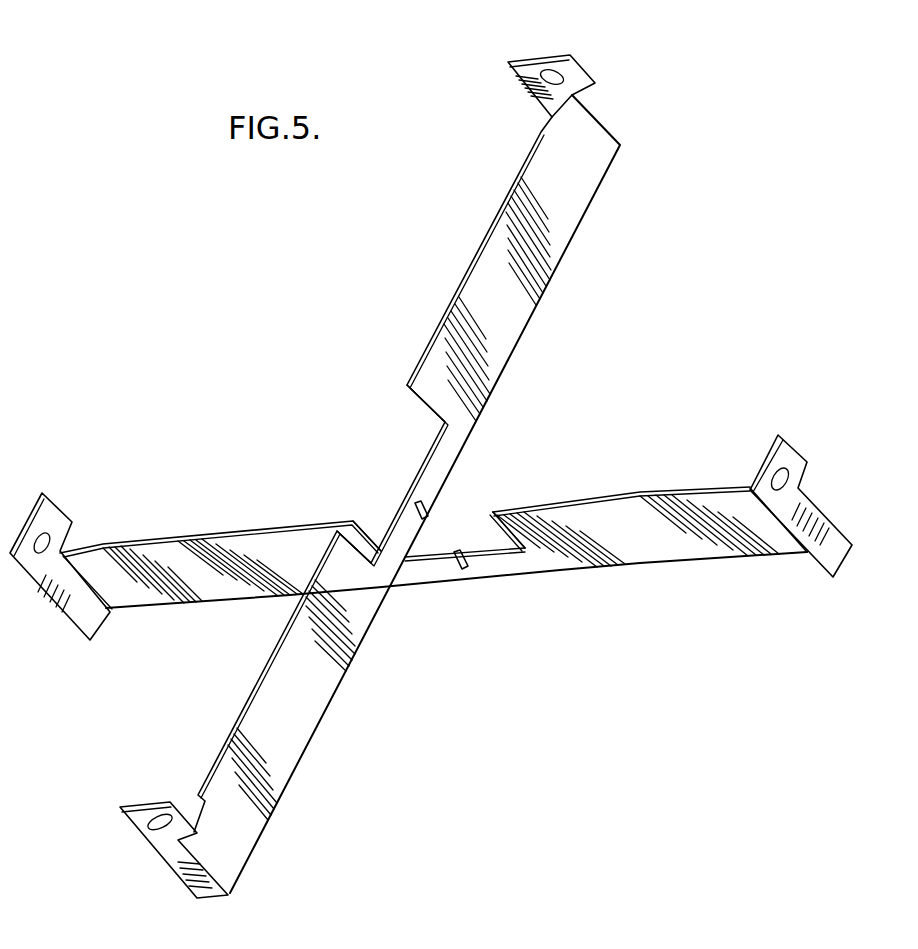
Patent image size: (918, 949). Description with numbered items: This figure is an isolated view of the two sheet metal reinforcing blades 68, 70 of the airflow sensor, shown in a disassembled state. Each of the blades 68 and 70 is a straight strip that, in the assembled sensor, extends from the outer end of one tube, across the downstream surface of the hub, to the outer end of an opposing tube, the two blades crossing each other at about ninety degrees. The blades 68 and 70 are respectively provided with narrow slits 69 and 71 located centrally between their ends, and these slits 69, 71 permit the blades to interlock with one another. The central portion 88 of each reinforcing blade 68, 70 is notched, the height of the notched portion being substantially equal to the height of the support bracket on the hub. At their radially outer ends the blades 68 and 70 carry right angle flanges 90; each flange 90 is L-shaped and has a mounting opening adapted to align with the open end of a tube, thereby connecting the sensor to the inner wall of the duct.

The reinforcing blade 68 is at (450, 302).
The reinforcing blade 70 is at (650, 565).
The slit 69 is at (430, 517).
The slit 71 is at (455, 550).
The central portion 88 is at (392, 476).
The right angle flange 90 is at (552, 57).